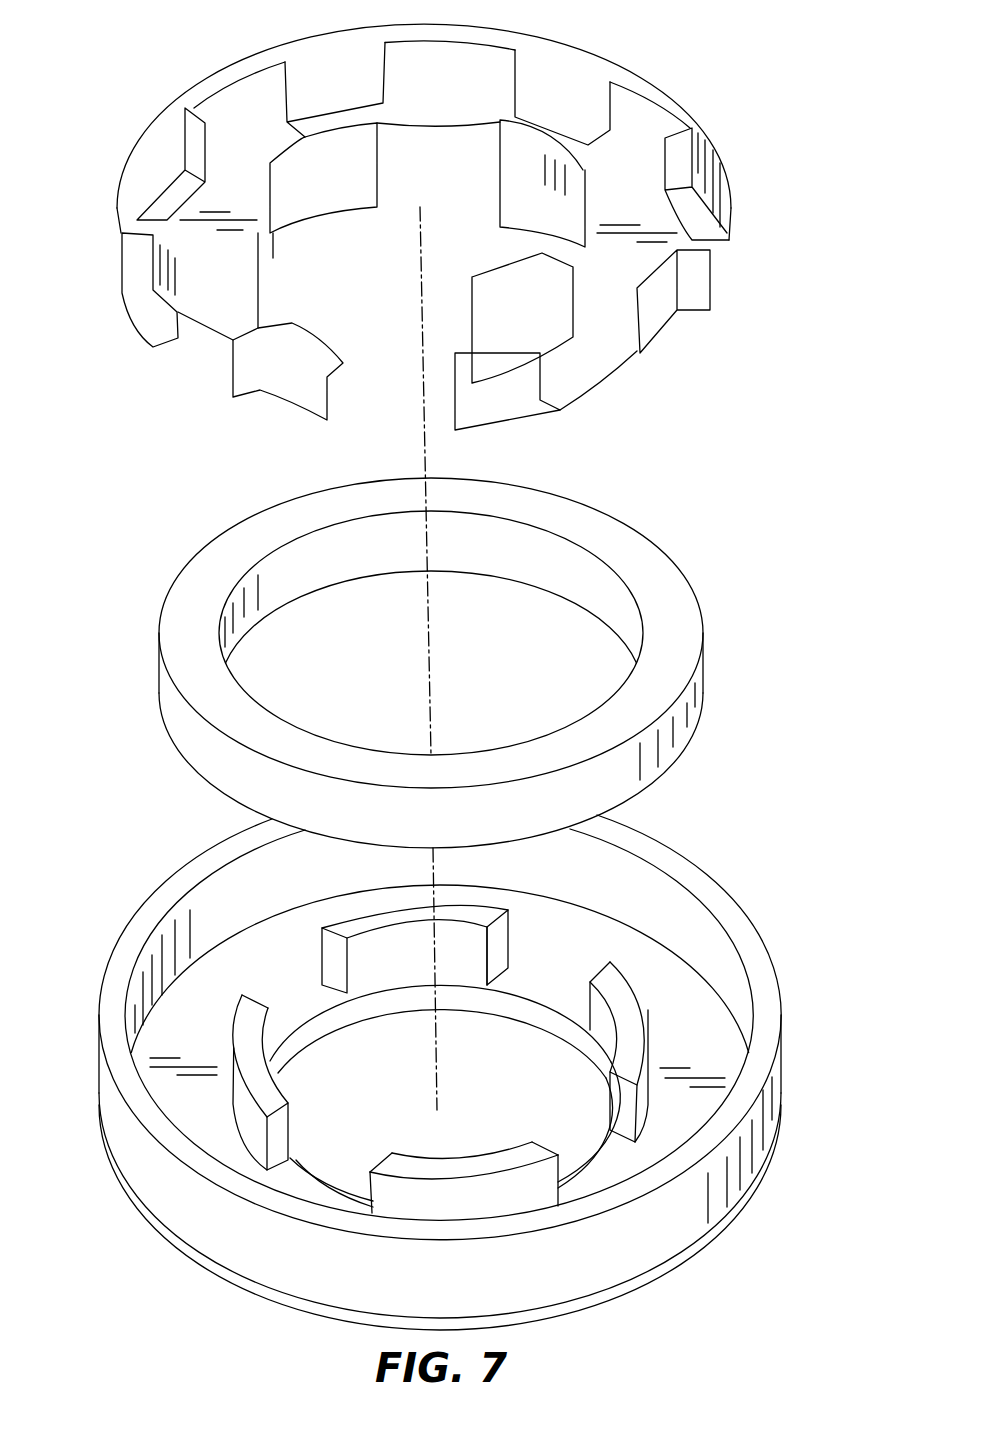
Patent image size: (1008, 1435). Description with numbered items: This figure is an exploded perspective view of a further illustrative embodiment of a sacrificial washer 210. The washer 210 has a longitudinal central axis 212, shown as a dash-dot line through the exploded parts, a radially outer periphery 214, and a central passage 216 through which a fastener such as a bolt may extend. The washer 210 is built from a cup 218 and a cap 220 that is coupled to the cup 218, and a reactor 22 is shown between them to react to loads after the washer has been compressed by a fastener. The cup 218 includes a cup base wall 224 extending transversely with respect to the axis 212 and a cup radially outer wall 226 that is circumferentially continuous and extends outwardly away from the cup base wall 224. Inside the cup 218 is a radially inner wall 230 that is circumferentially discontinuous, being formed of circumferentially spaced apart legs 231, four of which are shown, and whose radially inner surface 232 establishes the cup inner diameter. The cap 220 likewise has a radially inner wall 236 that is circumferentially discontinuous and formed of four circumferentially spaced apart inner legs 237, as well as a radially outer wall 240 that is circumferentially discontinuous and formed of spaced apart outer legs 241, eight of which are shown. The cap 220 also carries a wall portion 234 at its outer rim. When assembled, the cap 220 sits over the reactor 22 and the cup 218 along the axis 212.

The washer 210 is at (451, 224).
The cap 220 is at (446, 224).
The outer ring wall 234 is at (230, 73).
The radially outer wall 240 is at (735, 175).
The outer legs 241 is at (148, 157).
The inner legs 237 is at (358, 174).
The radially inner wall 236 is at (500, 242).
The reactor 22 is at (758, 583).
The longitudinal central axis 212 is at (430, 627).
The cup 218 is at (489, 1072).
The radially outer periphery 214 is at (672, 1232).
The cup radially outer wall 226 is at (698, 876).
The cup base wall 224 is at (585, 965).
The passage 216 is at (537, 1115).
The legs 231 is at (244, 1010).
The radially inner surface 232 is at (472, 962).
The radially inner wall 230 is at (412, 958).